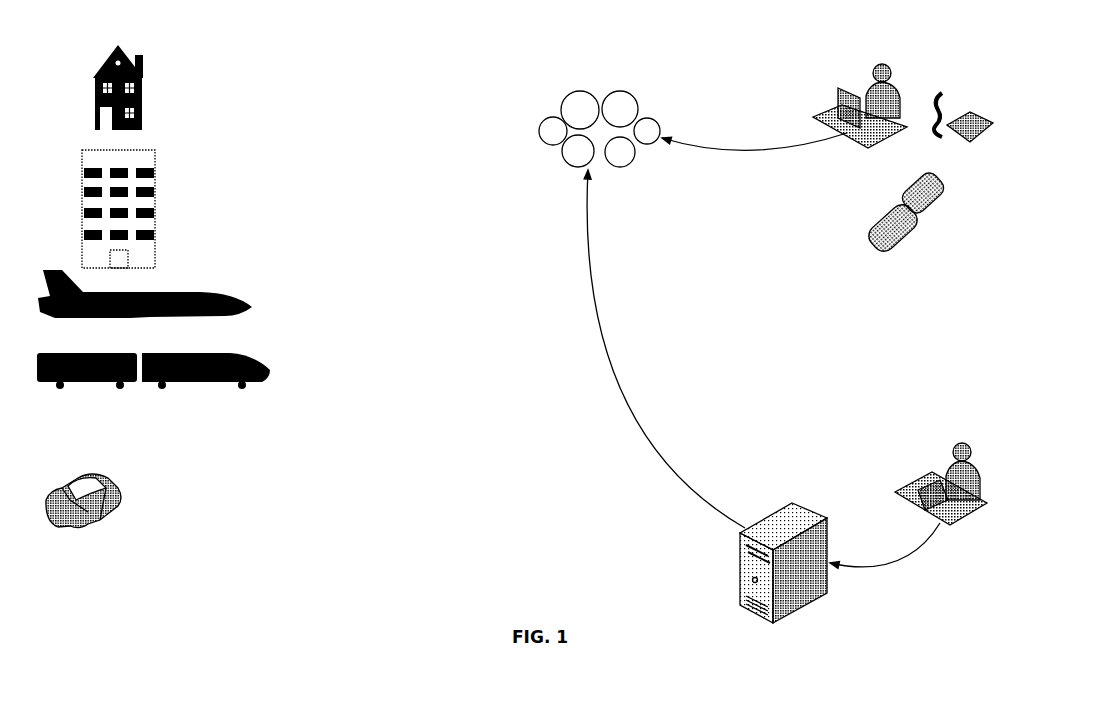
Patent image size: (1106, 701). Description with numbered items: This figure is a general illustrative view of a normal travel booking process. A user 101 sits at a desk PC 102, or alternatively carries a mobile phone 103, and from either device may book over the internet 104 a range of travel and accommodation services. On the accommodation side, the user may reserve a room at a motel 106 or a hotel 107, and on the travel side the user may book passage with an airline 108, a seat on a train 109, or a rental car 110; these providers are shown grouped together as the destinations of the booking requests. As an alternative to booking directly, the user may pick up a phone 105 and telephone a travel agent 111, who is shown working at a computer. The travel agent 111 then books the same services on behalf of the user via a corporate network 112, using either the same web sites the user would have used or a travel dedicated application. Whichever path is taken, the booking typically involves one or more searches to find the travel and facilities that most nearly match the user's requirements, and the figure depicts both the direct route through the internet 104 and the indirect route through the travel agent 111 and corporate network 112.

The user 101 is at (883, 65).
The desk PC 102 is at (840, 97).
The mobile phone 103 is at (868, 220).
The internet 104 is at (622, 95).
The phone 105 is at (997, 117).
The motel 106 is at (143, 100).
The hotel 107 is at (158, 198).
The airline 108 is at (233, 292).
The train 109 is at (252, 357).
The rental car 110 is at (120, 488).
The travel agent 111 is at (978, 455).
The corporate network 112 is at (792, 503).